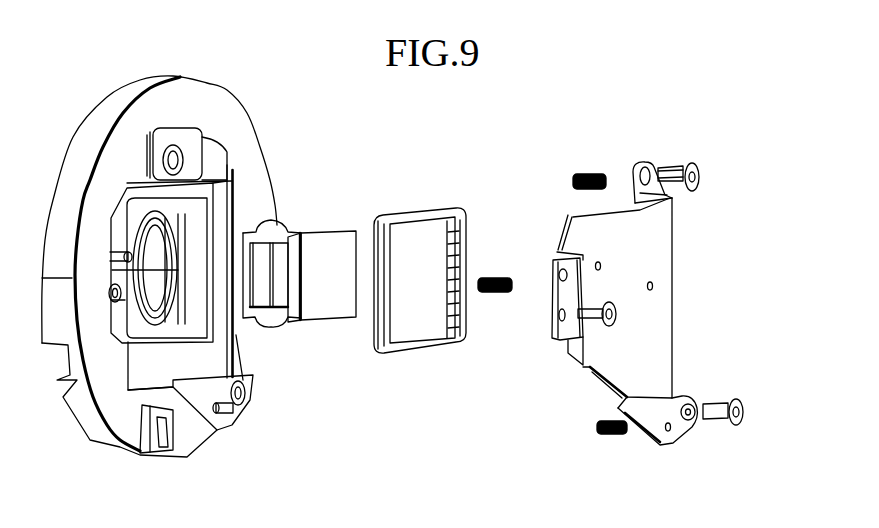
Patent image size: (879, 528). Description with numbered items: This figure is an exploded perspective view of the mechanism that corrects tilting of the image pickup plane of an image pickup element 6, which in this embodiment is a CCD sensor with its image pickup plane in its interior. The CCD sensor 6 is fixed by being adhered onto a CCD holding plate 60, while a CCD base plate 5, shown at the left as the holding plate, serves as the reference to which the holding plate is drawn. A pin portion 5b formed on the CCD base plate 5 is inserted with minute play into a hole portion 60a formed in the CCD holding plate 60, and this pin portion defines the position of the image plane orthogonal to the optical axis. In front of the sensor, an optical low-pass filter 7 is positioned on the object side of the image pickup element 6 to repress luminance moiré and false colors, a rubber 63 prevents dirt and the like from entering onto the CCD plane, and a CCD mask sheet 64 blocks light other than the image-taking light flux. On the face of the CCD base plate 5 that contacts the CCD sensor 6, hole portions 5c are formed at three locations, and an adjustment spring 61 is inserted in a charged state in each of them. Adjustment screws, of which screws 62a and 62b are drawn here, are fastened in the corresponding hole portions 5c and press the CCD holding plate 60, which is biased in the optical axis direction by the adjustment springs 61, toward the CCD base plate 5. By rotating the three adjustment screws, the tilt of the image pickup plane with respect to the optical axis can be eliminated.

The CCD base plate 5 is at (100, 358).
The pin portion 5b is at (128, 257).
The hole portions 5c is at (203, 153).
The image pickup element 6 is at (568, 355).
The optical low-pass filter 7 is at (342, 232).
The CCD holding plate 60 is at (660, 253).
The hole portion 60a is at (563, 277).
The adjustment spring 61 is at (588, 173).
The adjustment screw 62a is at (703, 172).
The adjustment screw 62b is at (590, 362).
The rubber 63 is at (410, 213).
The CCD mask sheet 64 is at (283, 220).